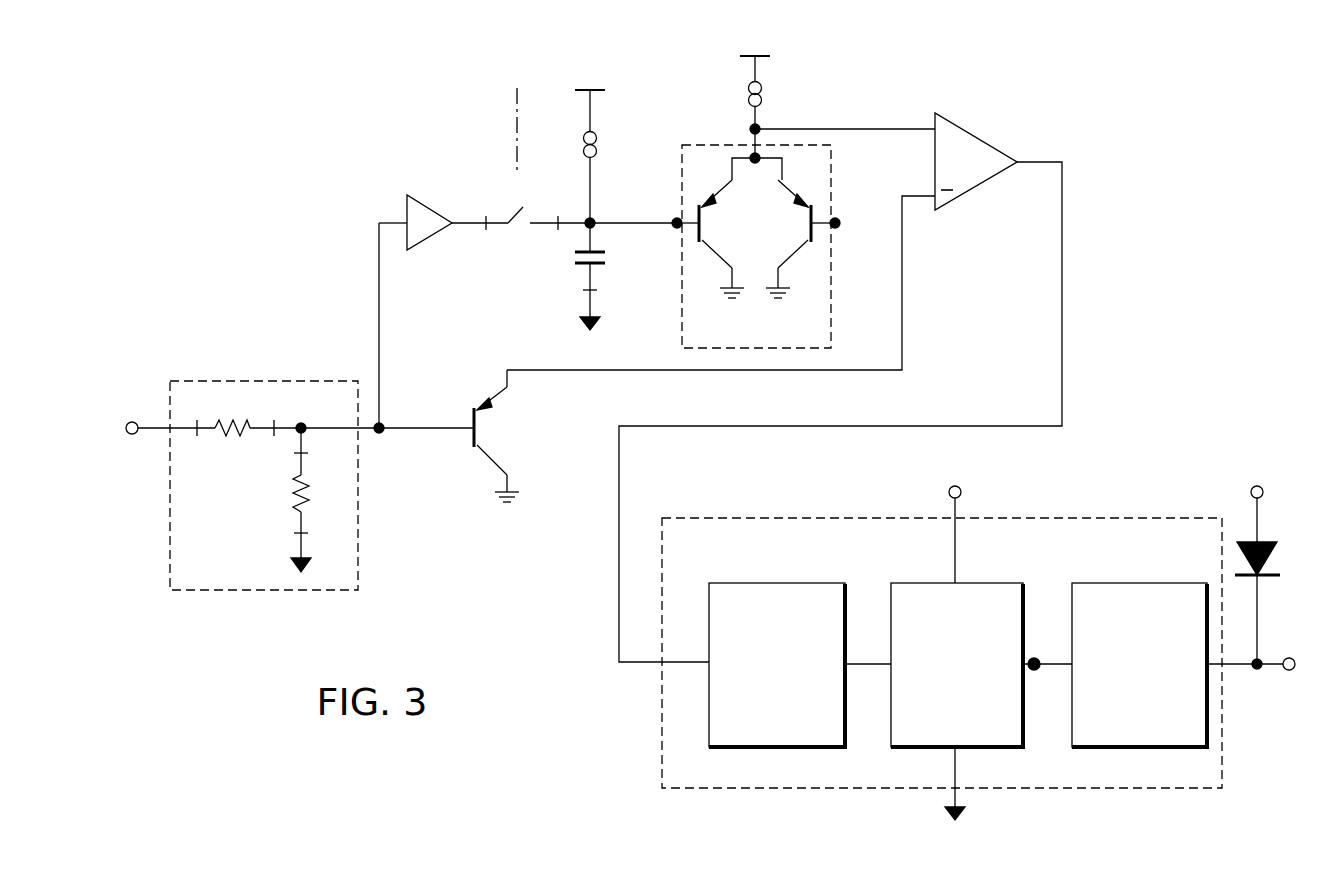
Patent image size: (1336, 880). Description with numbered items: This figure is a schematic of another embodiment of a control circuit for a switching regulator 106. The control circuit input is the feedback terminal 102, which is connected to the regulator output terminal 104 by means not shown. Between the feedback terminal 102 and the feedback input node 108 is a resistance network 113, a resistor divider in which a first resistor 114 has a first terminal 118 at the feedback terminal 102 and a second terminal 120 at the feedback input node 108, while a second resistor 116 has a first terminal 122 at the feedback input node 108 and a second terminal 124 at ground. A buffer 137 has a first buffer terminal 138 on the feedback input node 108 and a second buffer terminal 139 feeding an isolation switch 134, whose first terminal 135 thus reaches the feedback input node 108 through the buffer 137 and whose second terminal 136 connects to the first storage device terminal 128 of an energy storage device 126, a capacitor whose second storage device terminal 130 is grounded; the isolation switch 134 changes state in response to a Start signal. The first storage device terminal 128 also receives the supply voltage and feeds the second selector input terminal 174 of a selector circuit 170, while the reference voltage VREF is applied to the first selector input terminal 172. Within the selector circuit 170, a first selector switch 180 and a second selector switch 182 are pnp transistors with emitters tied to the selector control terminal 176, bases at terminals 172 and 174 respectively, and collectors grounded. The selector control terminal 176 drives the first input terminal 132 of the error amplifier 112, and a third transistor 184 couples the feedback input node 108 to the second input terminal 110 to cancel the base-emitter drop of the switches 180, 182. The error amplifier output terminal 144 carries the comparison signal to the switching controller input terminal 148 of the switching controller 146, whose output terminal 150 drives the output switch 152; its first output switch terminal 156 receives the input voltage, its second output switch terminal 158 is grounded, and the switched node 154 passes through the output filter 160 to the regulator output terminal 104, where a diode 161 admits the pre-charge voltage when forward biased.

The feedback terminal 102 is at (163, 413).
The regulator output terminal 104 is at (1259, 668).
The switching regulator 106 is at (830, 560).
The feedback input node 108 is at (387, 346).
The second input terminal of error amplifier 110 is at (721, 268).
The error amplifier 112 is at (952, 174).
The resistance network 113 is at (218, 531).
The first resistor 114 is at (255, 444).
The second resistor 116 is at (323, 493).
The first terminal of first resistor 118 is at (197, 414).
The second terminal of first resistor 120 is at (274, 414).
The first terminal of second resistor 122 is at (324, 449).
The second terminal of second resistor 124 is at (322, 542).
The energy storage device 126 is at (568, 260).
The first storage device terminal 128 is at (626, 156).
The second storage device terminal 130 is at (568, 296).
The first input terminal of error amplifier 132 is at (912, 145).
The isolation switch 134 is at (517, 141).
The first terminal of isolation switch 135 is at (485, 238).
The second terminal of isolation switch 136 is at (560, 209).
The buffer 137 is at (422, 202).
The first buffer terminal 138 is at (383, 208).
The second buffer terminal 139 is at (476, 208).
The error amplifier output terminal 144 is at (840, 396).
The switching controller 146 is at (759, 700).
The switching controller input terminal 148 is at (685, 682).
The switching controller output terminal 150 is at (868, 679).
The output switch 152 is at (939, 700).
The switched node 154 is at (1047, 680).
The first output switch terminal 156 is at (943, 518).
The second output switch terminal 158 is at (938, 783).
The output filter 160 is at (1121, 700).
The diode 161 is at (1245, 557).
The selector circuit 170 is at (788, 337).
The first selector input terminal 172 is at (849, 229).
The second selector input terminal 174 is at (667, 210).
The selector control terminal 176 is at (821, 91).
The first selector switch 180 is at (788, 239).
The second selector switch 182 is at (740, 225).
The third transistor 184 is at (499, 436).